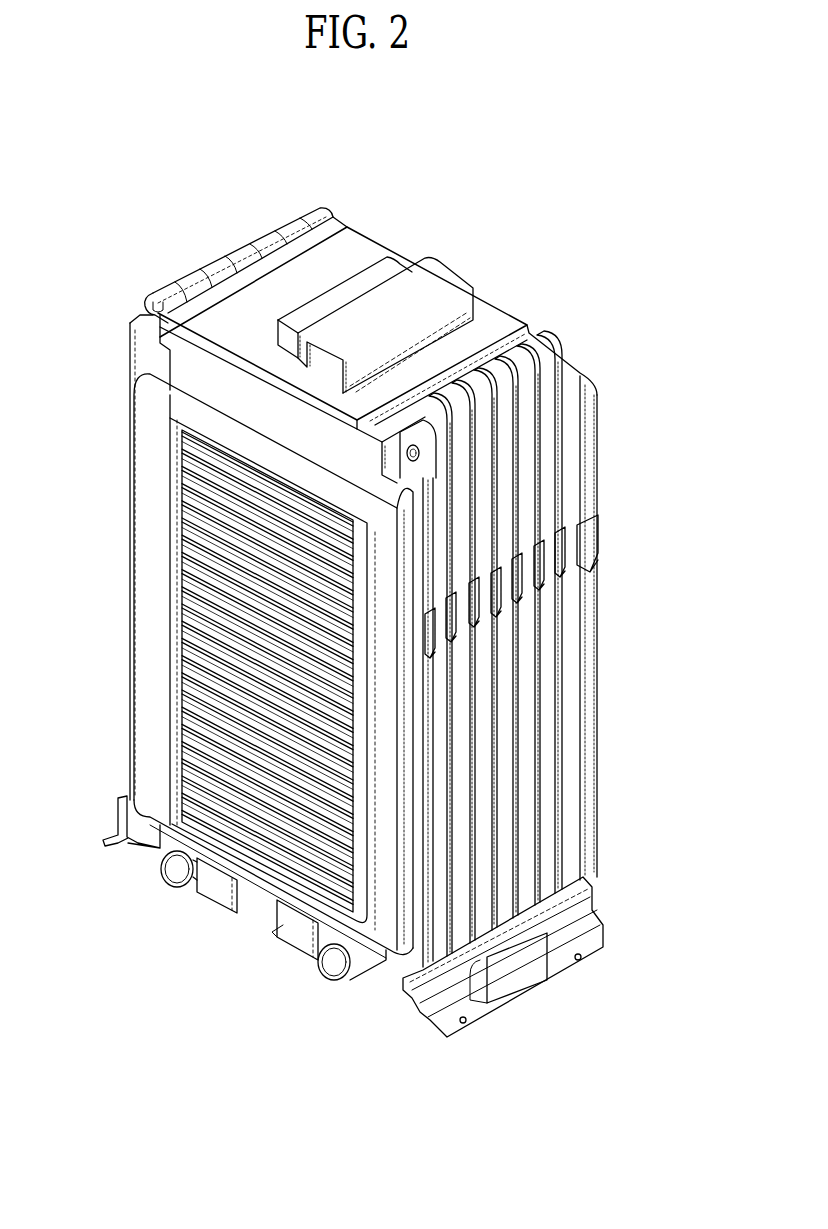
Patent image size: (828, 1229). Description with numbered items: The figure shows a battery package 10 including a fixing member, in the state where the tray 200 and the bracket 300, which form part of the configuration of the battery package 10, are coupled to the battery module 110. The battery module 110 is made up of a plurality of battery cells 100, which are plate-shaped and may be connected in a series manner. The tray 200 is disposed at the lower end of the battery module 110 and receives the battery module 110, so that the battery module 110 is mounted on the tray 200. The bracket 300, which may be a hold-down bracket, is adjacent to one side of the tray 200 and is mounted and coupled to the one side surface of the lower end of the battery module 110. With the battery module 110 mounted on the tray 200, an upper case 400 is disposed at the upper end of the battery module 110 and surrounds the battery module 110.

The battery package 10 is at (78, 175).
The battery cells 100 is at (553, 450).
The battery module 110 is at (560, 663).
The tray 200 is at (283, 937).
The bracket 300 is at (590, 897).
The upper case 400 is at (440, 280).